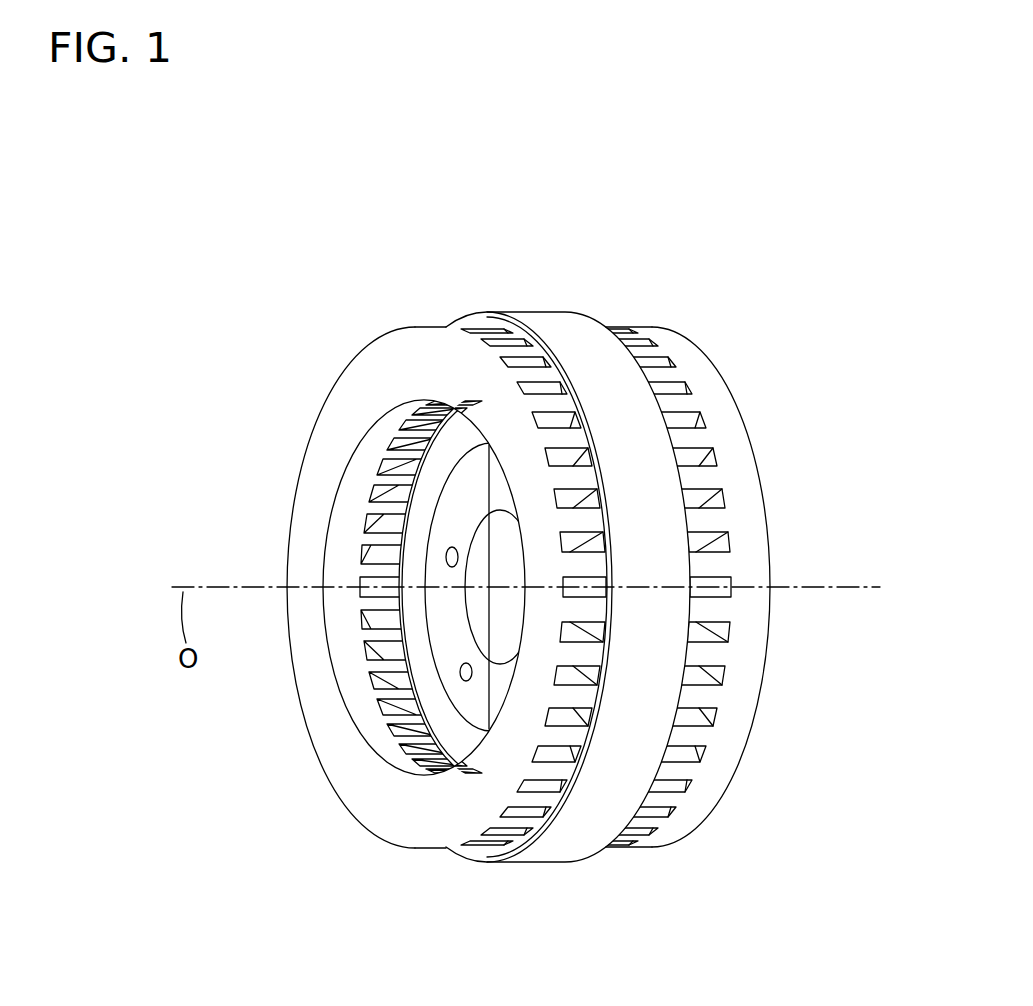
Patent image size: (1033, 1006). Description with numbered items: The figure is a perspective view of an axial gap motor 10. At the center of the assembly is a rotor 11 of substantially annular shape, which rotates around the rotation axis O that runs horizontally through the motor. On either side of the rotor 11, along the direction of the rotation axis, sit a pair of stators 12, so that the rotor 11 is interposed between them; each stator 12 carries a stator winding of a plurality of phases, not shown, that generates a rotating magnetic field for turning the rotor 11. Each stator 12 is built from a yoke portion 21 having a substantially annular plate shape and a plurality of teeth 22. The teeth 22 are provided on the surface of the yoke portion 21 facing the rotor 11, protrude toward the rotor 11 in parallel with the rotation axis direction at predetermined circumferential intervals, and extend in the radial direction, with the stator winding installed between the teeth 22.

The axial gap motor 10 is at (742, 265).
The rotor 11 is at (537, 290).
The stator 12 is at (440, 288).
The yoke portion 21 is at (718, 768).
The teeth 22 is at (537, 798).